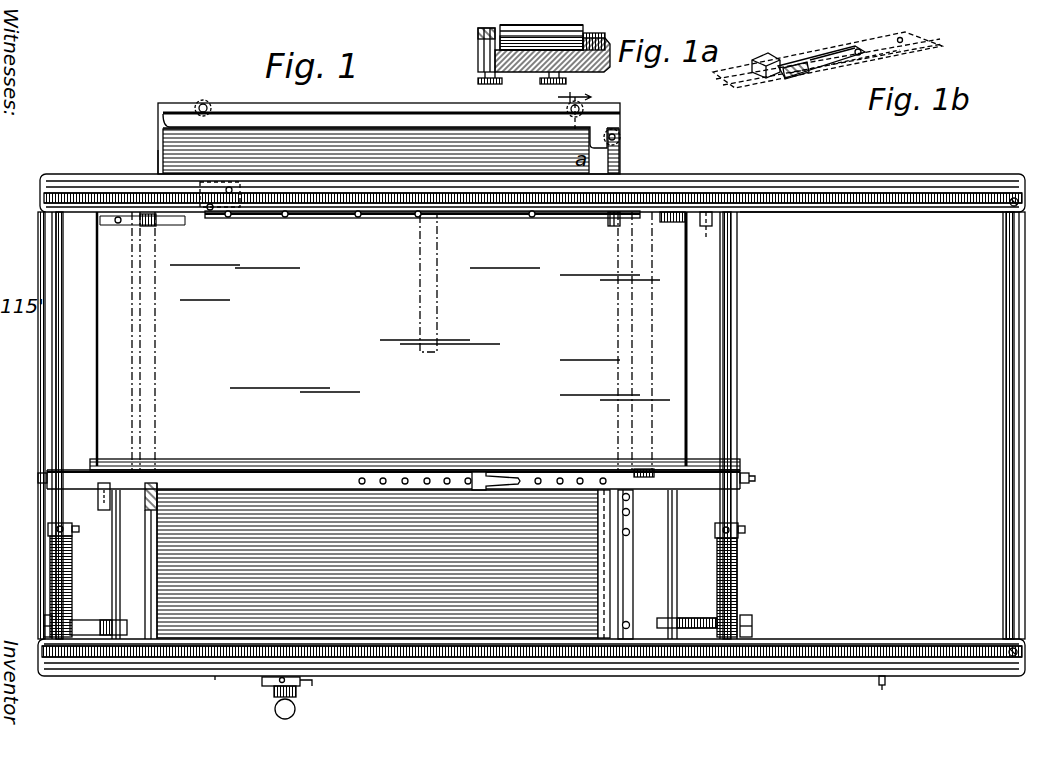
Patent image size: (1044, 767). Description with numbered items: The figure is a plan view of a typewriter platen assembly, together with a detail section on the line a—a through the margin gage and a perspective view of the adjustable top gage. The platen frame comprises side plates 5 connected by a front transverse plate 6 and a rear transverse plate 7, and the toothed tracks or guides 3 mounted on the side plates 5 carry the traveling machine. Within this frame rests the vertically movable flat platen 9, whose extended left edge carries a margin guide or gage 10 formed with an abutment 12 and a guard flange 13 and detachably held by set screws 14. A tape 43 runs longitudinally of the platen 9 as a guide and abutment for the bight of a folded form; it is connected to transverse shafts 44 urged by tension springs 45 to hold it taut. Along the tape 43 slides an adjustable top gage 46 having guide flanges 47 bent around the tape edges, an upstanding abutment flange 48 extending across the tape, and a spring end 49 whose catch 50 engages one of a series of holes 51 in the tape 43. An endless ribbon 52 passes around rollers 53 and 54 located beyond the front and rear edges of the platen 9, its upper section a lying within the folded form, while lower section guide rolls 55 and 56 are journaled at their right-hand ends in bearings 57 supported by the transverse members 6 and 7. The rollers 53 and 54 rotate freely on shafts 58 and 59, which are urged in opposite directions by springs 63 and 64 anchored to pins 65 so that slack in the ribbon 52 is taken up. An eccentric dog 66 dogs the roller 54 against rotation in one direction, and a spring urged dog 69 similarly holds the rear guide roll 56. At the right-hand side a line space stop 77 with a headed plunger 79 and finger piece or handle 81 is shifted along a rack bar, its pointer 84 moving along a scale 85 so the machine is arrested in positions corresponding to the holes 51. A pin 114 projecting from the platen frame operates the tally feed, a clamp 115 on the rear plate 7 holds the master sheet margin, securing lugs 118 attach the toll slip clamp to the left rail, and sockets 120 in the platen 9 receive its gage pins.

In FIG. 1, the tracks or guides 3 is at (706, 193).
In FIG. 1, the side plates 5 is at (860, 212).
In FIG. 1, the front transverse plate 6 is at (150, 556).
In FIG. 1, the rear transverse plate 7 is at (618, 404).
In FIG. 1, the platen 9 is at (377, 564).
In FIG. 1, the margin guide or gage 10 is at (408, 112).
In FIG. 1A, the margin guide or gage 10 is at (518, 19).
In FIG. 1A, the abutment 12 is at (478, 32).
In FIG. 1, the guard flange 13 is at (620, 134).
In FIG. 1A, the guard flange 13 is at (577, 26).
In FIG. 1, the set screws 14 is at (205, 103).
In FIG. 1A, the set screws 14 is at (522, 78).
In FIG. 1, the tape 43 is at (290, 472).
In FIG. 1B, the tape 43 is at (925, 47).
In FIG. 1, the transverse shafts 44 is at (58, 372).
In FIG. 1, the tension springs 45 is at (50, 560).
In FIG. 1, the adjustable top gage 46 is at (487, 478).
In FIG. 1B, the adjustable top gage 46 is at (805, 58).
In FIG. 1B, the guide flanges 47 is at (793, 78).
In FIG. 1B, the abutment flange 48 is at (762, 58).
In FIG. 1B, the spring end 49 is at (836, 52).
In FIG. 1B, the projection or catch 50 is at (858, 56).
In FIG. 1, the holes 51 is at (560, 478).
In FIG. 1B, the holes 51 is at (902, 40).
In FIG. 1, the endless ribbon 52 is at (391, 339).
In FIG. 1, the ribbon roller 53 is at (108, 220).
In FIG. 1, the ribbon roller 54 is at (650, 362).
In FIG. 1, the lower section guide roll 55 is at (160, 216).
In FIG. 1, the rear guide roll 56 is at (626, 214).
In FIG. 1, the bearings 57 is at (158, 480).
In FIG. 1, the shaft 58 is at (108, 502).
In FIG. 1, the shaft 59 is at (676, 510).
In FIG. 1, the spring 63 is at (88, 620).
In FIG. 1, the spring 64 is at (690, 618).
In FIG. 1, the pins 65 is at (46, 618).
In FIG. 1, the eccentric dog 66 is at (712, 212).
In FIG. 1, the spring urged dog 69 is at (645, 470).
In FIG. 1, the line space stop 77 is at (314, 683).
In FIG. 1, the headed plunger 79 is at (296, 695).
In FIG. 1, the finger piece or handle 81 is at (282, 719).
In FIG. 1, the pointer 84 is at (265, 682).
In FIG. 1, the graduations or scale 85 is at (218, 680).
In FIG. 1, the pin 114 is at (880, 687).
In FIG. 1, the clamp 115 is at (604, 634).
In FIG. 1, the securing lugs 118 is at (200, 182).
In FIG. 1, the sockets 120 is at (300, 220).
In FIG. 1A, the upper section of the ribbon a is at (575, 86).